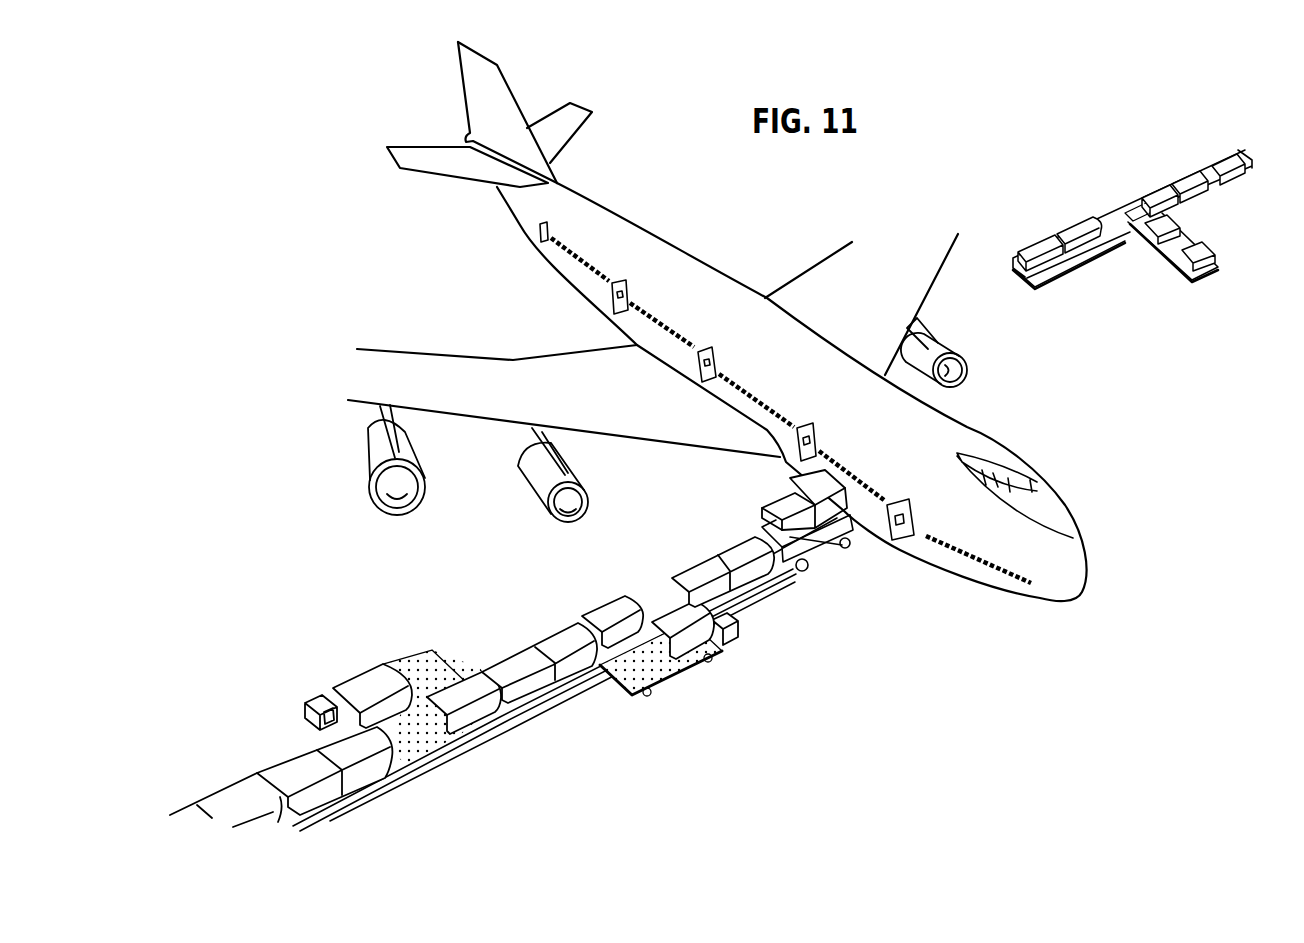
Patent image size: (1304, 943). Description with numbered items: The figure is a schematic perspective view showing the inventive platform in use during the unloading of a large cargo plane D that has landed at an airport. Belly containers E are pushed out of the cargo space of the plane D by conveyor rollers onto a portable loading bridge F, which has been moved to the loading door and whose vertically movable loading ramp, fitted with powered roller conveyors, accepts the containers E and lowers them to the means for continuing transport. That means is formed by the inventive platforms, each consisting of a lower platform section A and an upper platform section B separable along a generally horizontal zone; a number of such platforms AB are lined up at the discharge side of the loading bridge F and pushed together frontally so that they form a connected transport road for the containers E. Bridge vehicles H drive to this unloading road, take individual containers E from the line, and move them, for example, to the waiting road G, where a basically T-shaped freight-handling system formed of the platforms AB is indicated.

The plane D is at (717, 292).
The belly containers E is at (783, 505).
The portable loading bridge F is at (827, 553).
The bridge vehicles H is at (417, 667).
The platforms AB is at (803, 648).
The lower platform section A is at (1058, 276).
The upper platform section B is at (1162, 236).
The waiting road G is at (1132, 237).